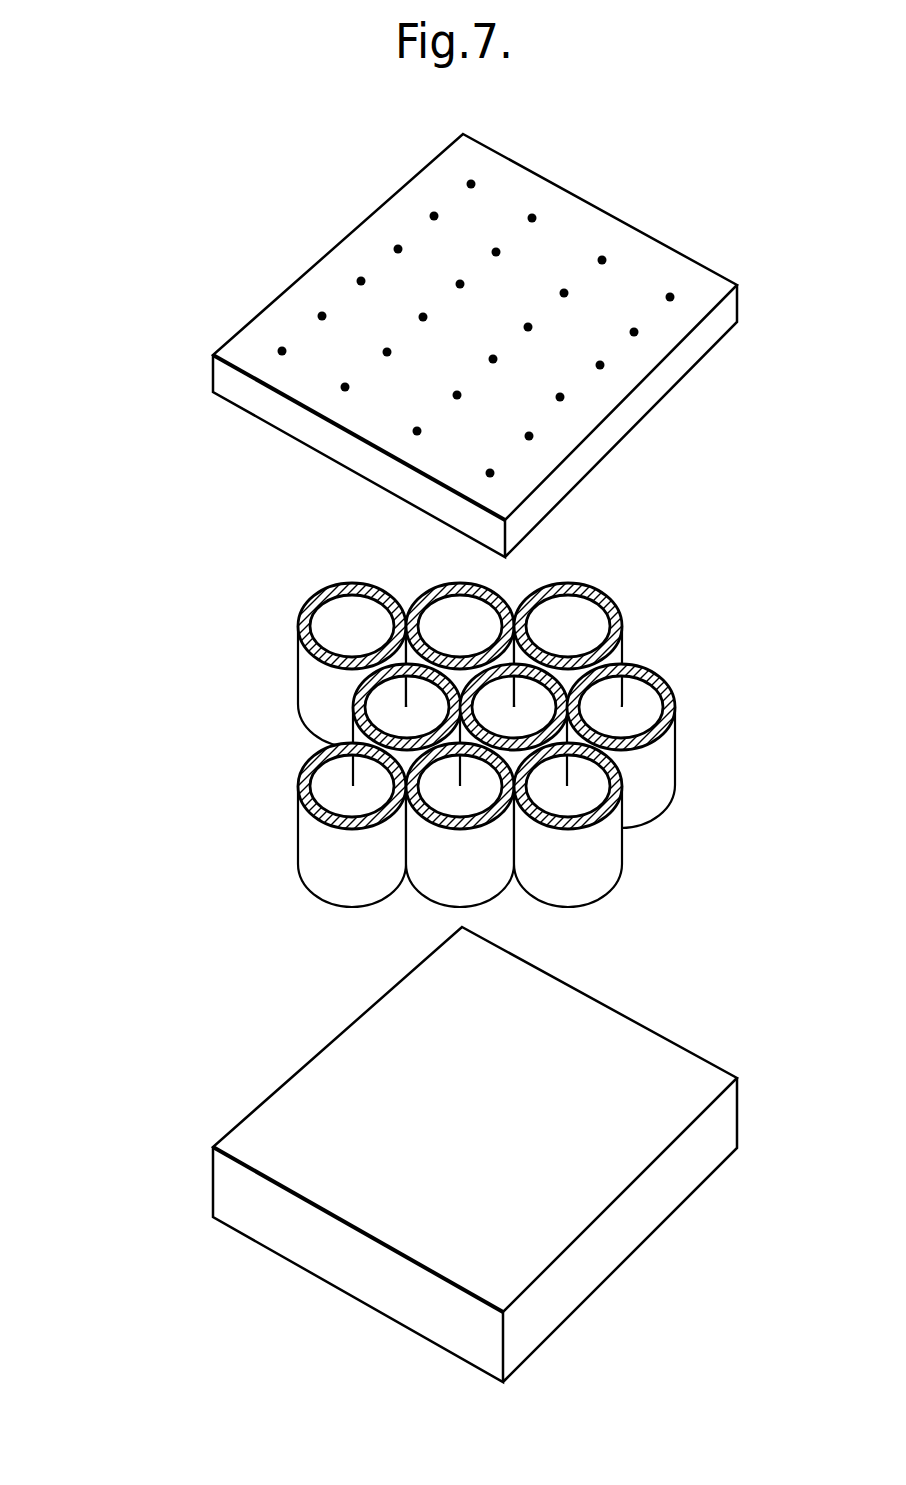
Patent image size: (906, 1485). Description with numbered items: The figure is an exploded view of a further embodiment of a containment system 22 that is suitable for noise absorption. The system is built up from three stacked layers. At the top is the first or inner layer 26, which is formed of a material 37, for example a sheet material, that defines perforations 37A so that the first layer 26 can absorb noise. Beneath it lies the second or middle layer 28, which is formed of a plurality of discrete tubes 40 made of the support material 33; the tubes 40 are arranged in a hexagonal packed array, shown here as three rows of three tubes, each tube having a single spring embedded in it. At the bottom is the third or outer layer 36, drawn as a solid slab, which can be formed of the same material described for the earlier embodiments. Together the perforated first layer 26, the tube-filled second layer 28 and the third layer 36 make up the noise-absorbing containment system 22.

The containment system 22 is at (163, 362).
The first layer 26 is at (355, 228).
The material 37 is at (443, 163).
The perforations 37A is at (460, 283).
The second layer 28 is at (297, 693).
The support material 33 is at (658, 682).
The tube 40 is at (677, 762).
The third layer 36 is at (213, 1200).